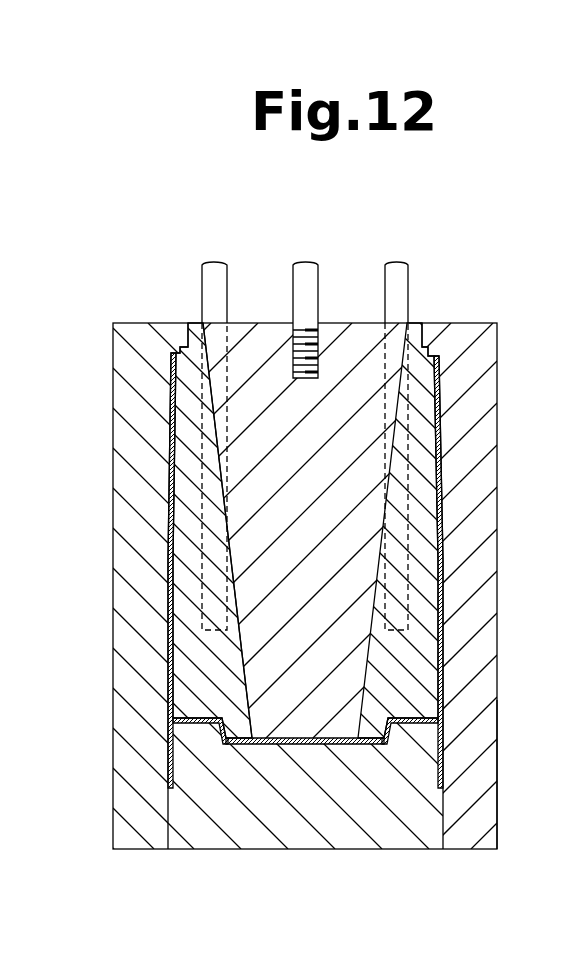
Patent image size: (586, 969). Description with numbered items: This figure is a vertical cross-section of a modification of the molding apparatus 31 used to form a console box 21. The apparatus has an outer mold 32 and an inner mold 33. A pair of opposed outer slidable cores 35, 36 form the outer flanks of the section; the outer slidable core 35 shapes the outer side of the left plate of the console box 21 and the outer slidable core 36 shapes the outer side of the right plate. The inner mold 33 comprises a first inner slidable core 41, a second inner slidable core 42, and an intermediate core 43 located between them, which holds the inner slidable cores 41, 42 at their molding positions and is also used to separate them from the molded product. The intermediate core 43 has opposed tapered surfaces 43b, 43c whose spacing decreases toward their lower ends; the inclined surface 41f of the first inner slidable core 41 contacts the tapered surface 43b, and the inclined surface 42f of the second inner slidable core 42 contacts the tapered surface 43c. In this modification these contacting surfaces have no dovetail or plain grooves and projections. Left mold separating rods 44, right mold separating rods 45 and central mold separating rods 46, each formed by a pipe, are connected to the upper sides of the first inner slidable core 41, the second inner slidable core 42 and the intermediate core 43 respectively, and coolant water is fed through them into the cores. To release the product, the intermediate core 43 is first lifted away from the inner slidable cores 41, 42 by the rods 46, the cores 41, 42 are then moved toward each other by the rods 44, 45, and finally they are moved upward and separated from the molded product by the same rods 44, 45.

The molding apparatus 31 is at (509, 322).
The outer mold 32 is at (497, 745).
The inner mold 33 is at (187, 704).
The console box 21 is at (443, 433).
The outer slidable core 35 is at (147, 498).
The outer slidable core 36 is at (497, 462).
The first inner slidable core 41 is at (197, 655).
The inclined surface 41f is at (248, 633).
The second inner slidable core 42 is at (413, 667).
The inclined surface 42f is at (410, 720).
The intermediate core 43 is at (267, 337).
The tapered surface 43b is at (238, 683).
The tapered surface 43c is at (356, 670).
The left mold separating rods 44 is at (213, 282).
The right mold separating rods 45 is at (397, 285).
The central mold separating rods 46 is at (310, 280).